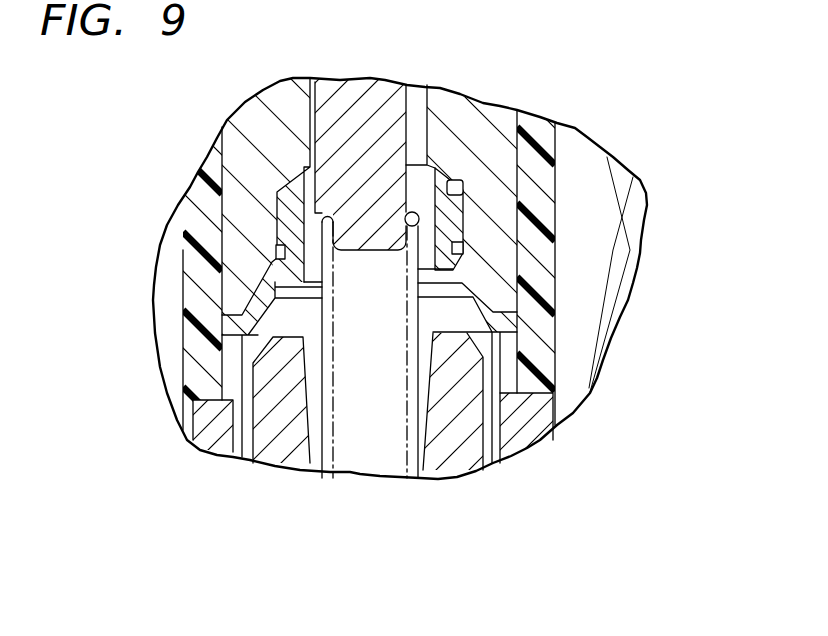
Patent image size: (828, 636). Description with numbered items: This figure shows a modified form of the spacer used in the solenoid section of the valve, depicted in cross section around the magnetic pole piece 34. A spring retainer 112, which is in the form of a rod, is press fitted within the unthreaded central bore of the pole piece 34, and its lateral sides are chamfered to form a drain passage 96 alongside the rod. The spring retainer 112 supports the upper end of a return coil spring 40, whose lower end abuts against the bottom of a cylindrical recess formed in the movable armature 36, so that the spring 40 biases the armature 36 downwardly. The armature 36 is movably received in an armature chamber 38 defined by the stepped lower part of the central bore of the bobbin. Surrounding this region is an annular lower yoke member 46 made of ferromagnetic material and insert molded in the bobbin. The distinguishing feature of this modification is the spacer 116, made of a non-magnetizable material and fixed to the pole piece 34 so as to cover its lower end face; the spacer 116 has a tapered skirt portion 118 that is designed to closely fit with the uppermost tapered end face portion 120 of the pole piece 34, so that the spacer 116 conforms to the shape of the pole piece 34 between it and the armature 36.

The spring retainer 112 is at (383, 88).
The drain passage 96 is at (418, 100).
The pole piece 34 is at (487, 107).
The uppermost tapered end face portion 120 is at (470, 130).
The spacer 116 is at (465, 190).
The tapered skirt portion 118 is at (467, 268).
The armature chamber 38 is at (381, 361).
The lower yoke member 46 is at (213, 440).
The return coil spring 40 is at (410, 447).
The armature 36 is at (453, 453).